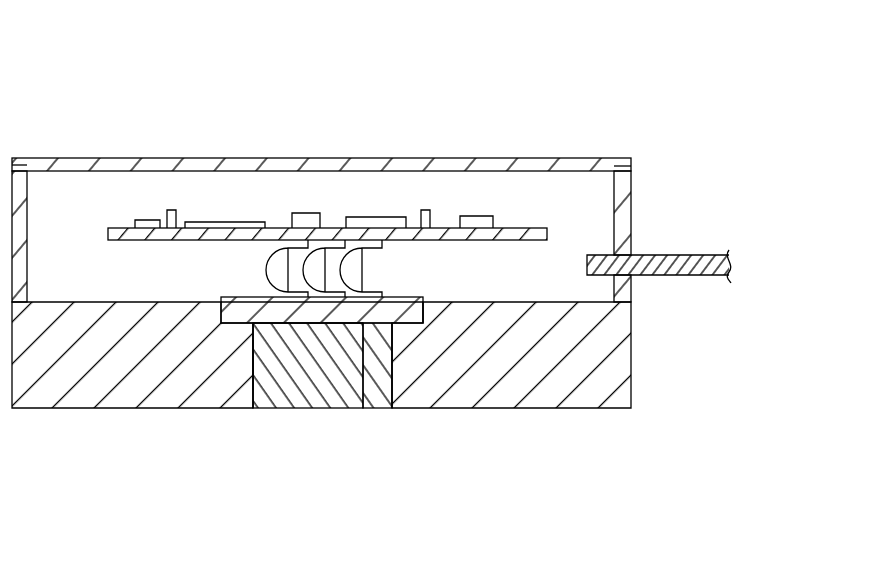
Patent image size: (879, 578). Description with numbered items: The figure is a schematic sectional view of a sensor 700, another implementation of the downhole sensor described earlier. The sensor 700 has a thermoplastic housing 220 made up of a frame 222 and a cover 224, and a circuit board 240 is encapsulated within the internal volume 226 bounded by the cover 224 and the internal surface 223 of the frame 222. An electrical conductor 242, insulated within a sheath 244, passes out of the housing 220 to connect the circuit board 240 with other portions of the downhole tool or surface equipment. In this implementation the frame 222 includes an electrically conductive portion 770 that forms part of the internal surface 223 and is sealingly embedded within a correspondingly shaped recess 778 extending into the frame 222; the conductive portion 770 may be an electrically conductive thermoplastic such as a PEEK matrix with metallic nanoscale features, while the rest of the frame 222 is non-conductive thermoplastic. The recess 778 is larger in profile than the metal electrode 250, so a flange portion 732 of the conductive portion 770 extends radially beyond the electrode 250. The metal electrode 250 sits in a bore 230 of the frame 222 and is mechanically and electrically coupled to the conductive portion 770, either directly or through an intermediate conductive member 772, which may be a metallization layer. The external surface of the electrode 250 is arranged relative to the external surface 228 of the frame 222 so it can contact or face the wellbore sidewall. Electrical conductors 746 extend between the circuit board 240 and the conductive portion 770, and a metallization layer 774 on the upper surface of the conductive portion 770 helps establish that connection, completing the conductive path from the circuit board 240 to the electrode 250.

The sensor 700 is at (181, 92).
The thermoplastic housing 220 is at (642, 187).
The frame 222 is at (632, 363).
The internal surface 223 is at (132, 297).
The cover 224 is at (455, 158).
The internal volume 226 is at (565, 187).
The external surface 228 is at (537, 408).
The bore 230 is at (256, 394).
The circuit board 240 is at (125, 227).
The electrical conductor 242 is at (643, 275).
The sheath 244 is at (697, 275).
The metal electrode 250 is at (252, 362).
The flange portion 732 is at (405, 323).
The electrical conductors 746 is at (345, 242).
The electrically conductive portion 770 is at (423, 310).
The intermediate conductive member 772 is at (363, 343).
The metallization layer 774 is at (382, 297).
The recess 778 is at (283, 330).